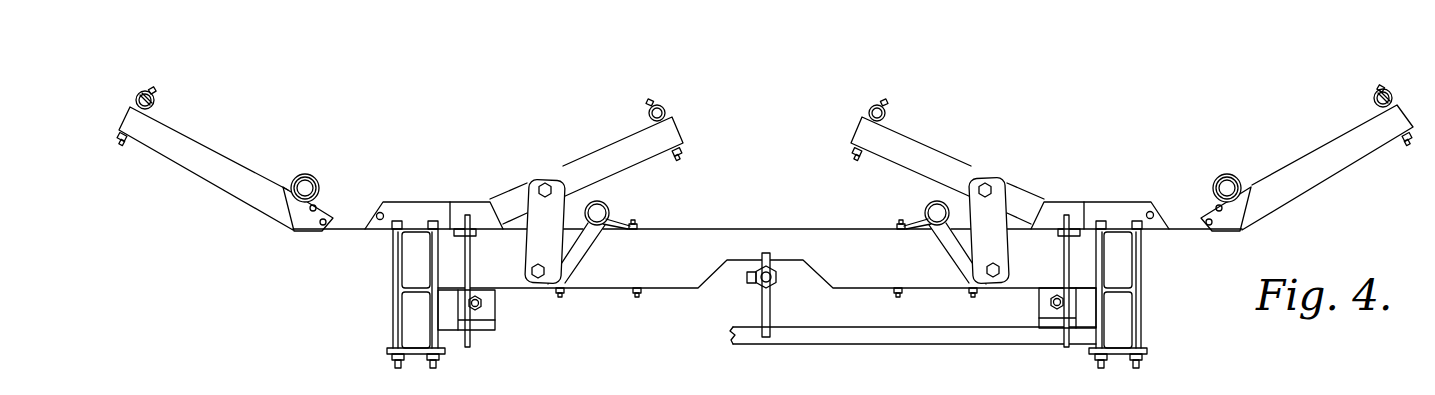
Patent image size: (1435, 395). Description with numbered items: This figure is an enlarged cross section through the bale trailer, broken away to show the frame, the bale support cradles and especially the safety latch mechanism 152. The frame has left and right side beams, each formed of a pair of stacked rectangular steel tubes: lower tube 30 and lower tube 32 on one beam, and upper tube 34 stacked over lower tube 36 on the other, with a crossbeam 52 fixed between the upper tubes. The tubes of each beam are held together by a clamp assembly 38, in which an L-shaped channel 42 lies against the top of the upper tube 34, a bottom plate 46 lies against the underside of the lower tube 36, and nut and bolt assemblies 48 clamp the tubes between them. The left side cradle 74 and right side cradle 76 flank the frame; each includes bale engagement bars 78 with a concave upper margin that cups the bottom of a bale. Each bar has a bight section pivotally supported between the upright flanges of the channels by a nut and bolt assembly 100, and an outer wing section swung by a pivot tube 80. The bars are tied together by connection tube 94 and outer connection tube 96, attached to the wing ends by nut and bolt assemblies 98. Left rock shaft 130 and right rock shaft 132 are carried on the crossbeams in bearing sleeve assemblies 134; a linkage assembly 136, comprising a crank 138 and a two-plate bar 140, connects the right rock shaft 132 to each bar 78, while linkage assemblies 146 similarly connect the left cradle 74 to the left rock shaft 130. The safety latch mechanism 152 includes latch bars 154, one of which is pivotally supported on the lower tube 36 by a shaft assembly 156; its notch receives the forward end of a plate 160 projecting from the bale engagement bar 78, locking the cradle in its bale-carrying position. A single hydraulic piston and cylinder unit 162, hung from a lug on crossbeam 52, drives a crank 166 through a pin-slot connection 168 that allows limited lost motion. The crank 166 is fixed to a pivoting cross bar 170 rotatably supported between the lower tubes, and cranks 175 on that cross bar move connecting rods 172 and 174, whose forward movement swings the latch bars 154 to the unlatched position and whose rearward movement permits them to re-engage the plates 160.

The lower tube 30 is at (1133, 261).
The lower tube 32 is at (1131, 316).
The upper tube 34 is at (400, 268).
The lower tube 36 is at (400, 311).
The clamp assembly 38 is at (365, 229).
The L-shaped channel 42 is at (433, 203).
The bottom plate 46 is at (412, 354).
The nut and bolt assemblies 48 is at (395, 364).
The crossbeam 52 is at (730, 230).
The left side cradle 74 is at (1338, 182).
The right side cradle 76 is at (195, 186).
The bale engagement bar 78 is at (200, 142).
The pivot tube 80 is at (306, 175).
The connection tube 94 is at (664, 105).
The outer connection tube 96 is at (137, 96).
The nut and bolt assemblies 98 is at (153, 93).
The nut and bolt assembly 100 is at (380, 212).
The left rock shaft 130 is at (922, 207).
The right rock shaft 132 is at (605, 203).
The bearing sleeve assembly 134 is at (622, 224).
The linkage assembly 136 is at (570, 257).
The crank 138 is at (588, 235).
The bar 140 is at (543, 287).
The linkage assembly 146 is at (993, 284).
The safety latch mechanism 152 is at (748, 318).
The latch bar 154 is at (472, 255).
The shaft assembly 156 is at (463, 338).
The plate 160 is at (471, 228).
The hydraulic piston and cylinder unit 162 is at (775, 265).
The crank 166 is at (770, 306).
The pin-slot connection 168 is at (747, 280).
The pivoting cross bar 170 is at (830, 345).
The connecting rod 172 is at (1047, 313).
The connecting rod 174 is at (482, 318).
The crank 175 is at (1057, 327).